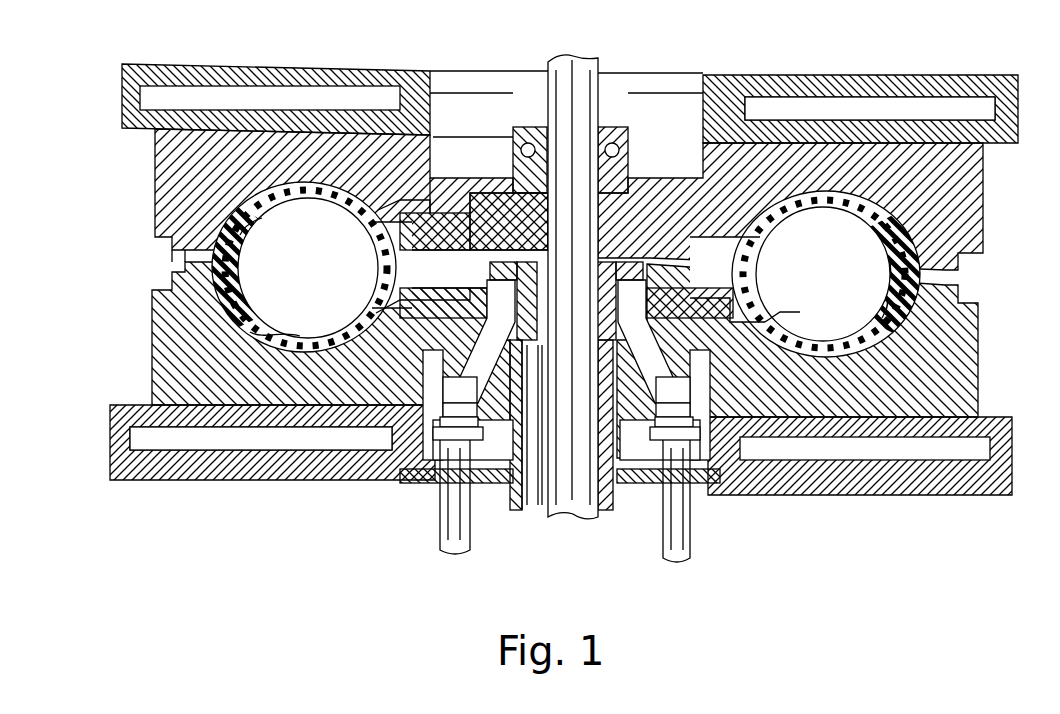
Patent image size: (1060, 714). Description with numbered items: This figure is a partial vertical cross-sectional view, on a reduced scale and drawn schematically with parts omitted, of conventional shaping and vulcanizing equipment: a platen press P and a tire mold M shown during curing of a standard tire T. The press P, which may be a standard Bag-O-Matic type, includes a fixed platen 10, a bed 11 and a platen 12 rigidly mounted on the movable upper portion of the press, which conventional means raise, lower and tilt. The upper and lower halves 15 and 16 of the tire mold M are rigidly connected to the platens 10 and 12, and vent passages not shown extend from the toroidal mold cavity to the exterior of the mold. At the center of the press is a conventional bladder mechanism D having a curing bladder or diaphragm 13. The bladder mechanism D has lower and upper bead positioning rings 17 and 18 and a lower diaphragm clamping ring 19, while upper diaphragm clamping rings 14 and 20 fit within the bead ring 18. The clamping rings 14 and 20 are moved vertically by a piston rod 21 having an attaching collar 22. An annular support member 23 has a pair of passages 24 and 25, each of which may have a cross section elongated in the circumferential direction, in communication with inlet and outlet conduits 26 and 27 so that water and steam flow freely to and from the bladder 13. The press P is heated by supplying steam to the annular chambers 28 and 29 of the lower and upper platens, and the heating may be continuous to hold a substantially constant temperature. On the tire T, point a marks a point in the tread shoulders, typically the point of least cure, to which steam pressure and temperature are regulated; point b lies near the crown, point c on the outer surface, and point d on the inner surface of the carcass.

The fixed platen 10 is at (110, 430).
The bed 11 is at (865, 496).
The platen 12 is at (122, 100).
The curing bladder 13 is at (255, 316).
The upper diaphragm clamping ring 14 is at (478, 226).
The upper half of the tire mold 15 is at (152, 330).
The lower half of the tire mold 16 is at (155, 185).
The lower bead positioning ring 17 is at (396, 328).
The upper bead positioning ring 18 is at (390, 214).
The lower diaphragm clamping ring 19 is at (430, 292).
The upper diaphragm clamping ring 20 is at (505, 178).
The piston rod 21 is at (575, 517).
The attaching collar 22 is at (630, 165).
The annular support member 23 is at (522, 405).
The passage 24 is at (528, 355).
The passage 25 is at (640, 420).
The inlet conduit 26 is at (440, 512).
The outlet conduit 27 is at (690, 522).
The annular chamber 28 is at (261, 439).
The annular chamber 29 is at (870, 109).
The platen press P is at (118, 64).
The tire mold M is at (988, 283).
The bladder mechanism D is at (730, 284).
The standard tire T is at (282, 330).
The point in the tread shoulders a is at (887, 308).
The point near the crown b is at (890, 264).
The point on the outer surface c is at (172, 252).
The point on the inner surface of the carcass d is at (246, 232).